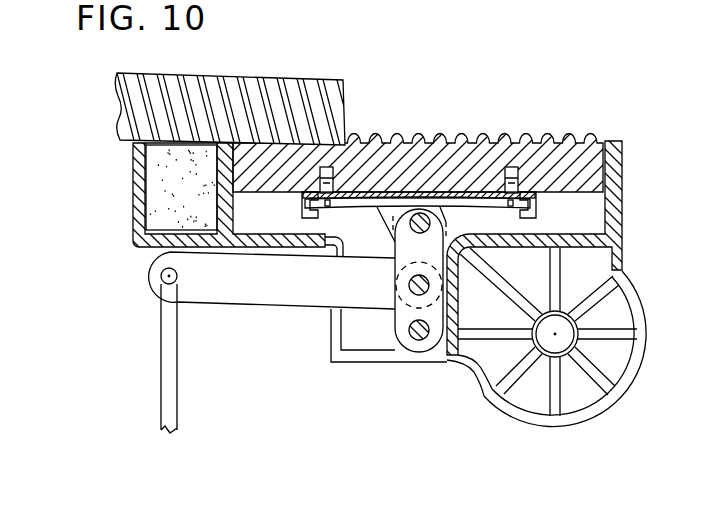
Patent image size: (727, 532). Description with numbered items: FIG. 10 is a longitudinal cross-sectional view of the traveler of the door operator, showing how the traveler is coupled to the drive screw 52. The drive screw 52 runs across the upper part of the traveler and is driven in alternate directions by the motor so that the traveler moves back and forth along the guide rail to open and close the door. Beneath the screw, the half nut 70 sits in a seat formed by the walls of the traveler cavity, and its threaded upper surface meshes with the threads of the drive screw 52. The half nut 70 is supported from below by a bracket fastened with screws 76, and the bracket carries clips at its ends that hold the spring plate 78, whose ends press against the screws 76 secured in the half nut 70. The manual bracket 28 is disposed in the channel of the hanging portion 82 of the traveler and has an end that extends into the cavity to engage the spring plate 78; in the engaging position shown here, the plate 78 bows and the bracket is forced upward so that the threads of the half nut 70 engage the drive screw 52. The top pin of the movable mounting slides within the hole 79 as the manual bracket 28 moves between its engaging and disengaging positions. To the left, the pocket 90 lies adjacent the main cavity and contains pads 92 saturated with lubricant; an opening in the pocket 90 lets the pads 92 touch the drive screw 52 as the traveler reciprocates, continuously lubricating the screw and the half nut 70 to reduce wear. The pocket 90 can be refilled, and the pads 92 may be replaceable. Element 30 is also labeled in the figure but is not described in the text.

The drive screw 52 is at (247, 80).
The pocket 90 is at (142, 164).
The pads 92 is at (167, 193).
The half nut 70 is at (588, 176).
The screws 76 is at (304, 206).
The spring plate 78 is at (356, 208).
The hole 79 is at (407, 230).
The manual bracket 28 is at (255, 300).
The rod 30 is at (178, 383).
The hanging portion 82 is at (622, 442).